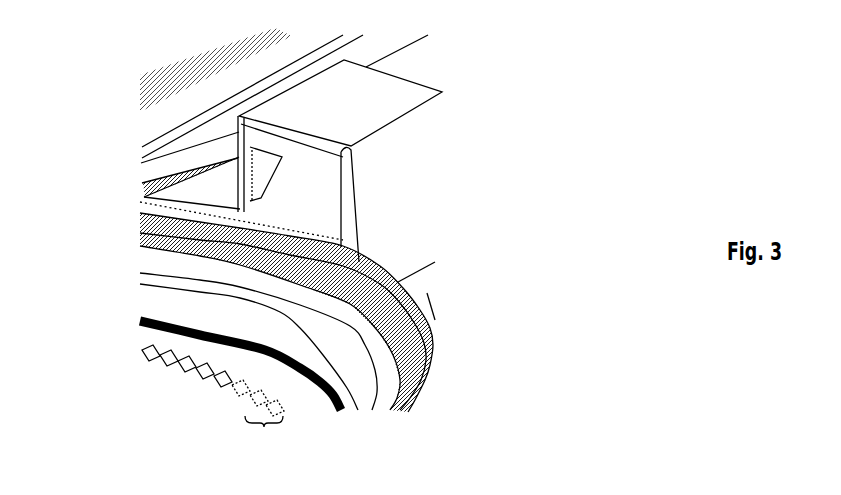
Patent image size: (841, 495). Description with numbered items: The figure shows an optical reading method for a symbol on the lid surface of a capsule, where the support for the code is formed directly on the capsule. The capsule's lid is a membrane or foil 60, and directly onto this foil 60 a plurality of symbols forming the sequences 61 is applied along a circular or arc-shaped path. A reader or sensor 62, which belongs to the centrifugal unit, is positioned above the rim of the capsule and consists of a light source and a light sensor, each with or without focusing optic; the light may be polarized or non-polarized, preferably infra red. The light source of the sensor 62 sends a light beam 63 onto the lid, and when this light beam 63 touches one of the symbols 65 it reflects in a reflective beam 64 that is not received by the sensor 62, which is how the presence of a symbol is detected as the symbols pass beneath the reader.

The foil 60 is at (305, 409).
The sequences 61 is at (213, 404).
The sensor 62 is at (397, 158).
The light beam 63 is at (230, 368).
The reflective beam 64 is at (223, 370).
The symbol 65 is at (184, 382).